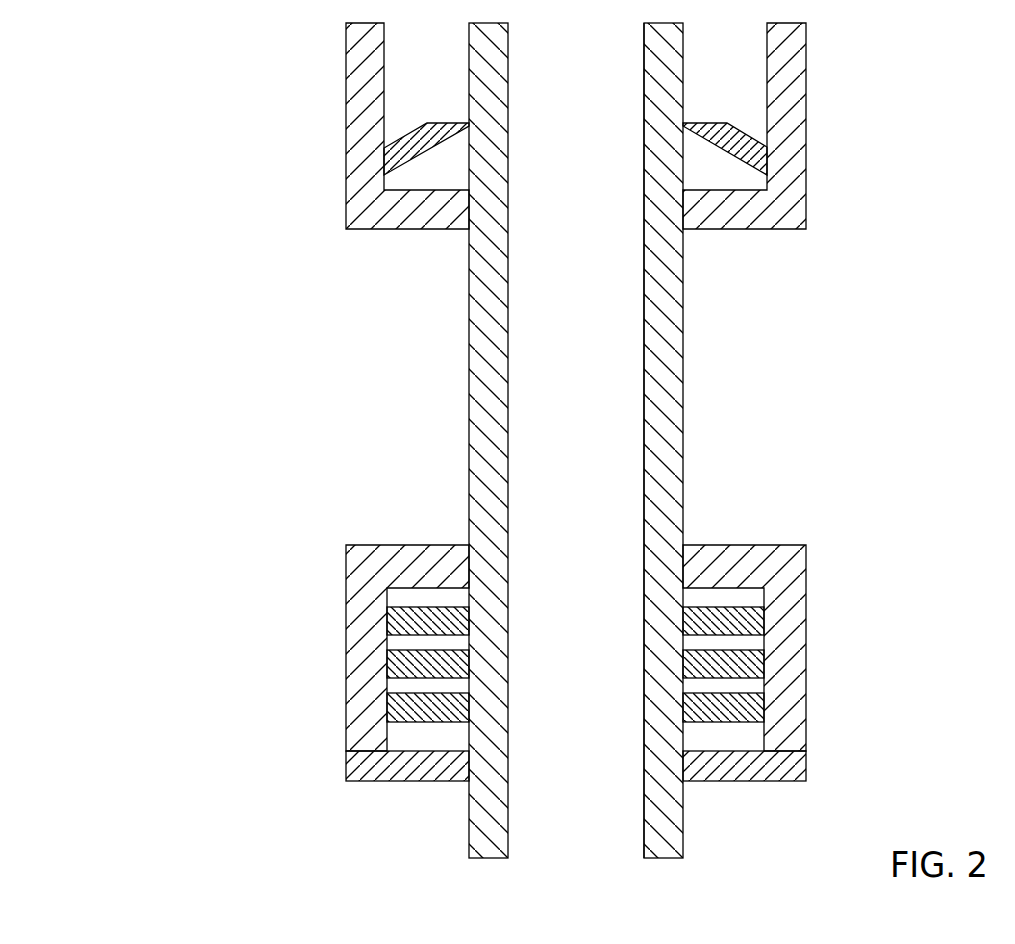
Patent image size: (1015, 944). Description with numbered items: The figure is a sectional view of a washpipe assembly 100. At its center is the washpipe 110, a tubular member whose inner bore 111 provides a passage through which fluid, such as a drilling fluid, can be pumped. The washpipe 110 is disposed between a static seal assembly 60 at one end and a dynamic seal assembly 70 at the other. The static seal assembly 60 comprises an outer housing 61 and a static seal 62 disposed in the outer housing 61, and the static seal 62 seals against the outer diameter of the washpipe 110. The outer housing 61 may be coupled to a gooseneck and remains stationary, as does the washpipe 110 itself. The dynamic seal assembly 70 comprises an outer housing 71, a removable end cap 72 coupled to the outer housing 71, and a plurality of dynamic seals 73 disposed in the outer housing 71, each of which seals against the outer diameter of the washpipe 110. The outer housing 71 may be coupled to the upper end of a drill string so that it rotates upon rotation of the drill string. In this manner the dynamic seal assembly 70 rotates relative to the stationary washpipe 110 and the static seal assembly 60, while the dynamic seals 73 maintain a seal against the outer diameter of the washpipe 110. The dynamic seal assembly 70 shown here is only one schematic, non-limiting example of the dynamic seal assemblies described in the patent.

The washpipe assembly 100 is at (240, 153).
The washpipe 110 is at (684, 341).
The inner bore 111 is at (644, 55).
The static seal assembly 60 is at (801, 123).
The outer housing 61 is at (806, 42).
The static seal 62 is at (712, 122).
The dynamic seal assembly 70 is at (799, 667).
The outer housing 71 is at (806, 571).
The removable end cap 72 is at (767, 781).
The dynamic seals 73 is at (745, 660).